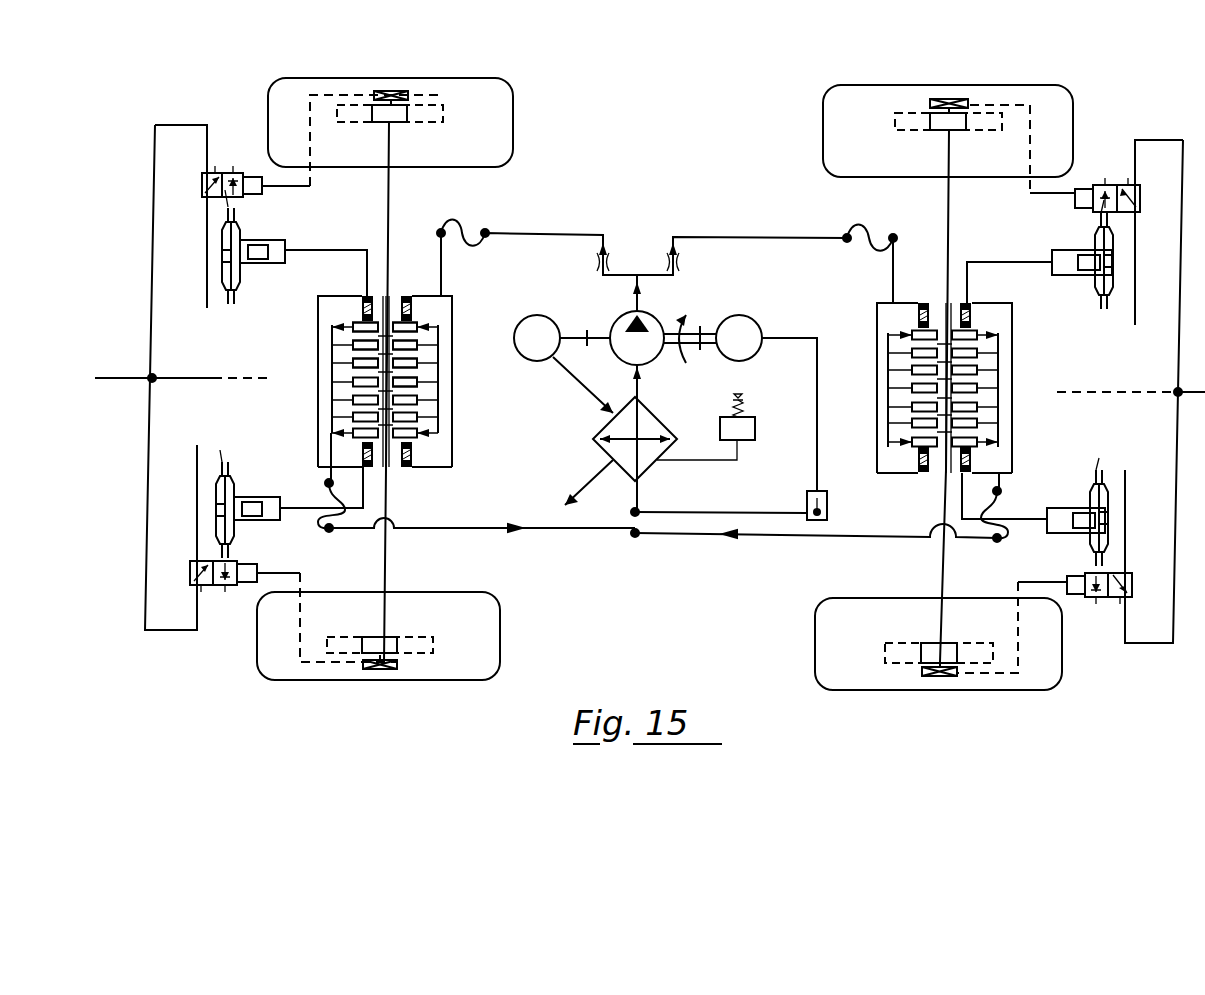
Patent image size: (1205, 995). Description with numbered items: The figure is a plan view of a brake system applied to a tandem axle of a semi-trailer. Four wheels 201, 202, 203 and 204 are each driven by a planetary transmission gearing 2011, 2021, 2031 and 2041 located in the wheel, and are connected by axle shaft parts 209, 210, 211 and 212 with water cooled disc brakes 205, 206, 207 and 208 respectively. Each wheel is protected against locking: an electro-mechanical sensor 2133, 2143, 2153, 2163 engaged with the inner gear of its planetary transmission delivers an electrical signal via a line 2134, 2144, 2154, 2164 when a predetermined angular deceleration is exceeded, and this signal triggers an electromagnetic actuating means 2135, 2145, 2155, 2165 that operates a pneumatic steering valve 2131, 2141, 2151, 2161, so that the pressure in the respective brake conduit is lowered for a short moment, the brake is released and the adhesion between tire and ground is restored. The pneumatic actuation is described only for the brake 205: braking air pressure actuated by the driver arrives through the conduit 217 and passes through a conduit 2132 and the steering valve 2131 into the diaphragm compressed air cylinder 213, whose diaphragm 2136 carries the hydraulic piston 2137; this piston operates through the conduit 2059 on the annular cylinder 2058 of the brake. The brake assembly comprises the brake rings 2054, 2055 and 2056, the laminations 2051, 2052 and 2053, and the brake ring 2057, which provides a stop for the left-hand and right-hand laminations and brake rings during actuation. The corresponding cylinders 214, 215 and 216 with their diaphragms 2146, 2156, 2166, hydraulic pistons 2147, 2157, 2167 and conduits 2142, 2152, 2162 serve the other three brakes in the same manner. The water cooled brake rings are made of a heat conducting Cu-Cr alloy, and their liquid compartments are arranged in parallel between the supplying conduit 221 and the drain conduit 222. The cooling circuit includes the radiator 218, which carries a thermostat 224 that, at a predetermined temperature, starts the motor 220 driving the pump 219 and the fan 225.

The wheel 201 is at (512, 80).
The planetary transmission gearing 2011 is at (425, 108).
The wheel 202 is at (492, 680).
The planetary transmission gearing 2021 is at (400, 645).
The wheel 203 is at (833, 90).
The planetary transmission gearing 2031 is at (925, 120).
The wheel 204 is at (820, 685).
The planetary transmission gearing 2041 is at (920, 652).
The water cooled disc brake 205 is at (378, 293).
The lamination 2051 is at (348, 326).
The lamination 2052 is at (355, 343).
The lamination 2053 is at (355, 364).
The brake ring 2054 is at (410, 327).
The brake ring 2055 is at (410, 346).
The brake ring 2056 is at (410, 364).
The brake ring 2057 is at (405, 381).
The annular cylinder 2058 is at (405, 304).
The conduit 2059 is at (325, 250).
The water cooled disc brake 206 is at (392, 420).
The water cooled disc brake 207 is at (952, 300).
The water cooled disc brake 208 is at (935, 473).
The axle shaft part 209 is at (390, 226).
The axle shaft part 210 is at (385, 560).
The axle shaft part 211 is at (946, 202).
The axle shaft part 212 is at (940, 560).
The diaphragm compressed air cylinder 213 is at (215, 290).
The pneumatic steering valve 2131 is at (210, 288).
The conduit 2132 is at (181, 125).
The electro-mechanical sensor 2133 is at (388, 93).
The line 2134 is at (308, 128).
The electromagnetic actuating means 2135 is at (257, 173).
The diaphragm 2136 is at (205, 284).
The hydraulic piston 2137 is at (287, 253).
The diaphragm compressed air cylinder 214 is at (236, 475).
The pneumatic steering valve 2141 is at (195, 560).
The conduit 2142 is at (172, 630).
The electro-mechanical sensor 2143 is at (380, 668).
The line 2144 is at (300, 632).
The electromagnetic actuating means 2145 is at (247, 585).
The diaphragm 2146 is at (240, 532).
The hydraulic piston 2147 is at (296, 486).
The diaphragm compressed air cylinder 215 is at (1092, 292).
The pneumatic steering valve 2151 is at (1118, 285).
The conduit 2152 is at (1160, 140).
The electro-mechanical sensor 2153 is at (948, 99).
The line 2154 is at (1030, 135).
The electromagnetic actuating means 2155 is at (1085, 185).
The diaphragm 2156 is at (1082, 293).
The hydraulic piston 2157 is at (1063, 262).
The diaphragm compressed air cylinder 216 is at (1096, 512).
The pneumatic steering valve 2161 is at (1120, 545).
The conduit 2162 is at (1150, 643).
The electro-mechanical sensor 2163 is at (938, 677).
The line 2164 is at (1018, 632).
The electromagnetic actuating means 2165 is at (1078, 597).
The diaphragm 2166 is at (1092, 545).
The hydraulic piston 2167 is at (1050, 512).
The conduit 217 is at (182, 380).
The radiator 218 is at (720, 420).
The pump 219 is at (614, 320).
The motor 220 is at (742, 362).
The supplying conduit 221 is at (443, 262).
The drain conduit 222 is at (329, 480).
The thermostat 224 is at (824, 492).
The fan 225 is at (515, 358).